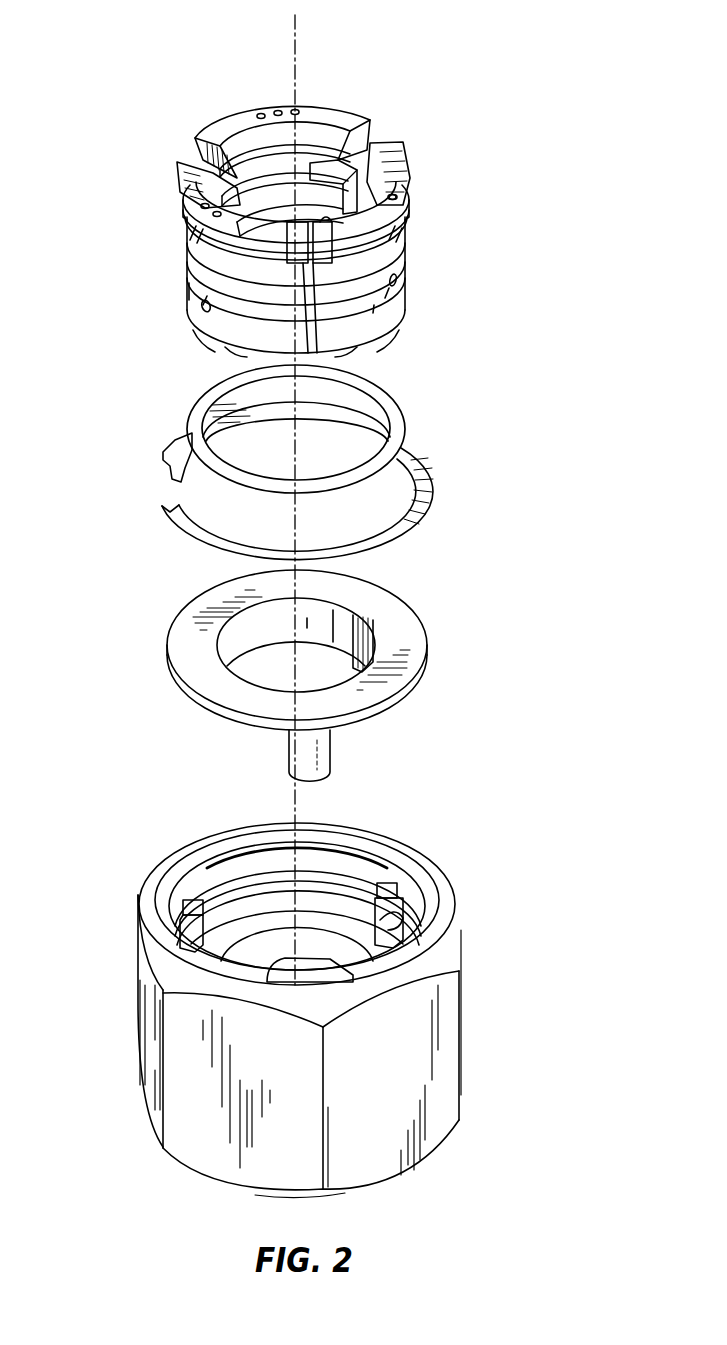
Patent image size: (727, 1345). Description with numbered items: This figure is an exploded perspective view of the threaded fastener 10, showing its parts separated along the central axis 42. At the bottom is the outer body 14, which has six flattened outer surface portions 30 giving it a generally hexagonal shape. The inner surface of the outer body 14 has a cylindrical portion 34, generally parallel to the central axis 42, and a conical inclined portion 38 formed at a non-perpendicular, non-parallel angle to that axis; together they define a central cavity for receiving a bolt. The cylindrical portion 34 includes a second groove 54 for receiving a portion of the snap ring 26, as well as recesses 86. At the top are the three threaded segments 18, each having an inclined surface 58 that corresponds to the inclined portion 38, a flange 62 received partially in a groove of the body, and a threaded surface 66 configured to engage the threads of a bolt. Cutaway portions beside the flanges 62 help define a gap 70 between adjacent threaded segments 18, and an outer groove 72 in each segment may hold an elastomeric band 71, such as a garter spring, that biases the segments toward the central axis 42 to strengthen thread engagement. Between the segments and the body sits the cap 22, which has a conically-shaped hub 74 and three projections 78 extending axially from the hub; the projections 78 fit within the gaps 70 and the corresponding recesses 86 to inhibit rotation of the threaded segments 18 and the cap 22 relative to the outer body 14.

The threaded fastener 10 is at (522, 170).
The outer body 14 is at (463, 1070).
The threaded segments 18 is at (308, 128).
The cap 22 is at (380, 607).
The snap ring 26 is at (177, 447).
The flattened outer surface portions 30 is at (213, 1147).
The cylindrical portion 34 is at (350, 860).
The inclined portion 38 is at (383, 922).
The central axis 42 is at (290, 62).
The second groove 54 is at (217, 853).
The inclined surface 58 is at (253, 352).
The flange 62 is at (223, 123).
The threaded surface 66 is at (300, 193).
The gap 70 is at (369, 145).
The elastomeric band 71 is at (400, 417).
The outer groove 72 is at (387, 277).
The conically-shaped hub 74 is at (407, 640).
The projections 78 is at (307, 748).
The recesses 86 is at (408, 928).